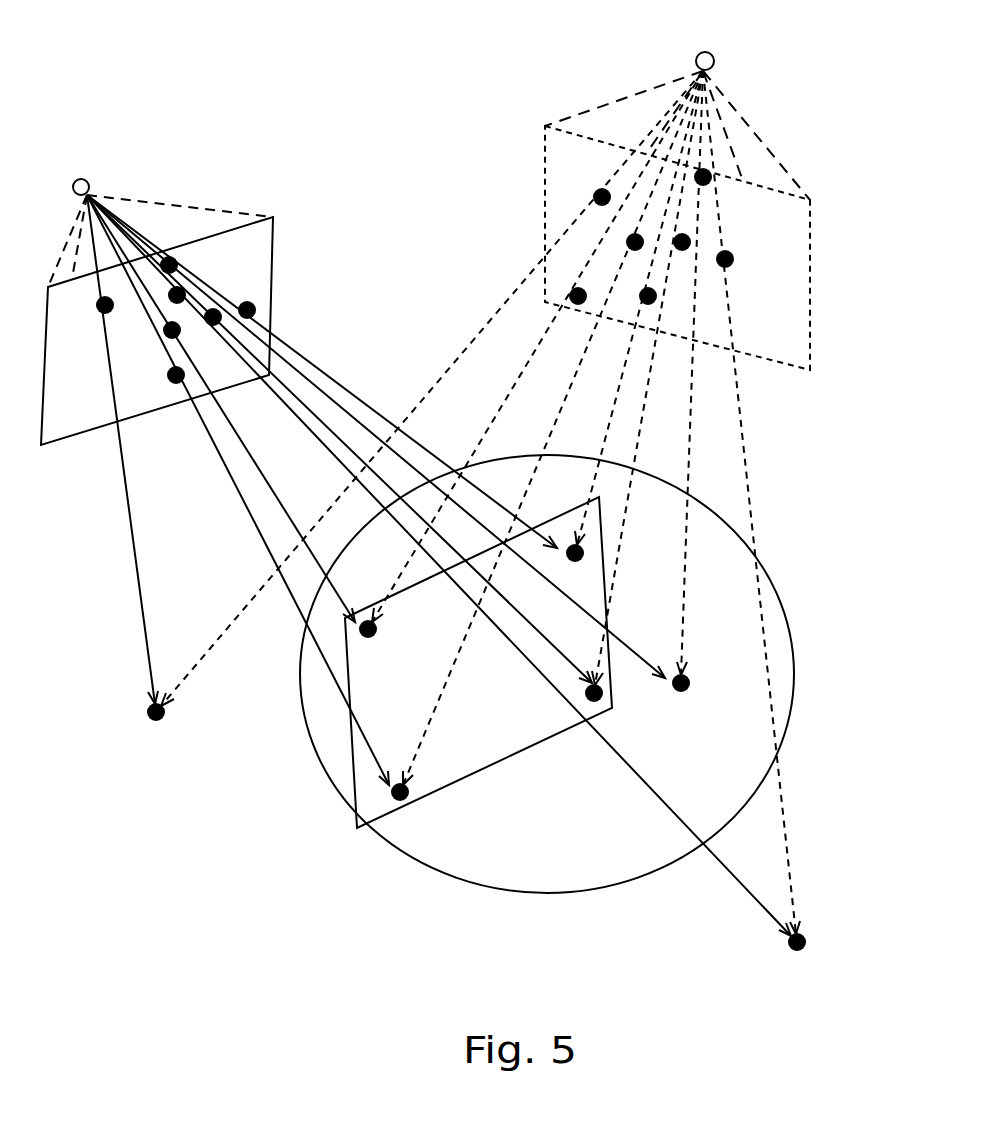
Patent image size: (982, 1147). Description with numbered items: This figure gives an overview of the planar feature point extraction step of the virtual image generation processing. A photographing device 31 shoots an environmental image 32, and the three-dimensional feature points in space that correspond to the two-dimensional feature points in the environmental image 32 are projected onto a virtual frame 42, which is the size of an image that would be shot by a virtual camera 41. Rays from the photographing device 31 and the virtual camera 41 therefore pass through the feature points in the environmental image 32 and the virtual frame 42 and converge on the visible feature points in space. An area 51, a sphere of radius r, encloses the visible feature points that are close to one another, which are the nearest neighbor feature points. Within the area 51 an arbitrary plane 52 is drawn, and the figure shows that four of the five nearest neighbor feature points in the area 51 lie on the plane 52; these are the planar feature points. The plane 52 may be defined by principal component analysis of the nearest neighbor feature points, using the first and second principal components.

The photographing device 31 is at (90, 190).
The environmental image 32 is at (273, 260).
The virtual camera 41 is at (713, 60).
The virtual frame 42 is at (810, 227).
The area 51 is at (795, 648).
The plane 52 is at (473, 777).